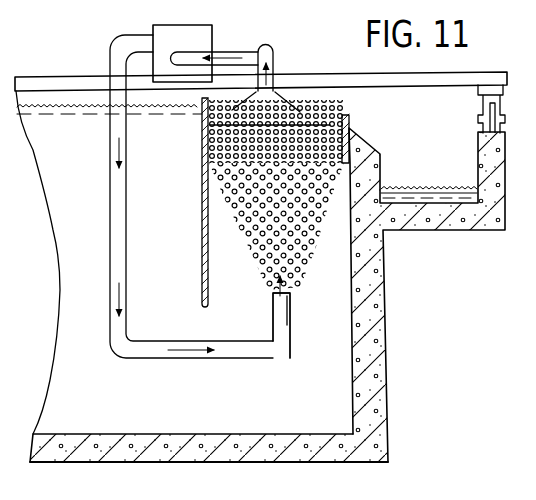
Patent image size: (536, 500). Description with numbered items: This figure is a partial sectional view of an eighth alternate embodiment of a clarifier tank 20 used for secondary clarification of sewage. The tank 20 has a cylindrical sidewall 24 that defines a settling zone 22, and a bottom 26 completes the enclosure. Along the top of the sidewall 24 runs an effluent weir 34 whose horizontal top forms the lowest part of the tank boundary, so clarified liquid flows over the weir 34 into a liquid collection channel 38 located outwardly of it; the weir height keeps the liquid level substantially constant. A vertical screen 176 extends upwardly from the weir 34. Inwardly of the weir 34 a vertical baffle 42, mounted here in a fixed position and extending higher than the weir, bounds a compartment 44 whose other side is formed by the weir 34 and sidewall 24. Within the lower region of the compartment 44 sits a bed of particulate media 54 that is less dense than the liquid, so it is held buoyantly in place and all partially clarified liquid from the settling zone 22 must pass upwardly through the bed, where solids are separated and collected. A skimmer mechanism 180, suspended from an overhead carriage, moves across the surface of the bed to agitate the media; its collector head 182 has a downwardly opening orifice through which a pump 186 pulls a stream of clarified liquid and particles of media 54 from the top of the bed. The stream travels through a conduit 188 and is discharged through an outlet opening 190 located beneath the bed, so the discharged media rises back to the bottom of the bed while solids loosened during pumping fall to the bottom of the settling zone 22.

The clarifier tank 20 is at (261, 272).
The settling zone 22 is at (317, 413).
The sidewall 24 is at (383, 267).
The bottom 26 is at (318, 453).
The effluent weir 34 is at (352, 126).
The liquid collection channel 38 is at (432, 184).
The vertical baffle 42 is at (203, 236).
The compartment 44 is at (263, 235).
The bed of particulate media 54 is at (245, 126).
The vertical screen 176 is at (338, 95).
The skimmer mechanism 180 is at (301, 95).
The collector head 182 is at (252, 93).
The pump 186 is at (205, 53).
The conduit 188 is at (112, 300).
The outlet opening 190 is at (291, 292).